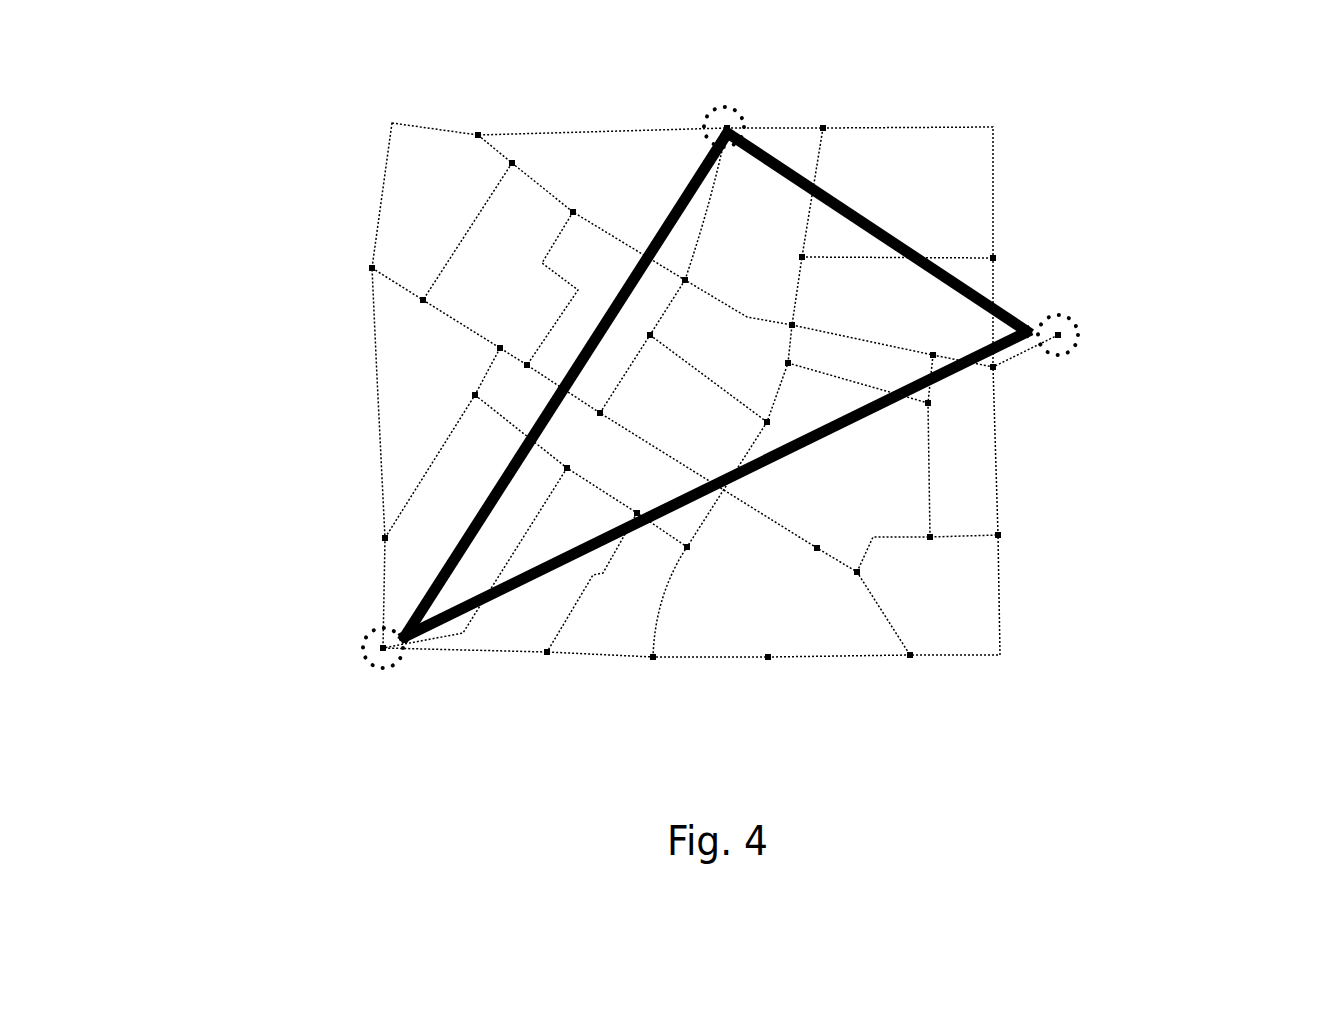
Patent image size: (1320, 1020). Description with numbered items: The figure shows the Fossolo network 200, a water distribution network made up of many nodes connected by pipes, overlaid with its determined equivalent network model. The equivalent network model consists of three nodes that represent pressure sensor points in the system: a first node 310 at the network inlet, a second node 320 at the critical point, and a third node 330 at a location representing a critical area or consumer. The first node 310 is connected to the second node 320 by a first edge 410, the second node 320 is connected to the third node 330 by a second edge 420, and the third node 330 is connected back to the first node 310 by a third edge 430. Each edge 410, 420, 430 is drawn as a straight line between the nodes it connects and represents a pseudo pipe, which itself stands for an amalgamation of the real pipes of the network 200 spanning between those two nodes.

The Fossolo network 200 is at (380, 205).
The first node 310 is at (1074, 317).
The second node 320 is at (365, 653).
The third node 330 is at (745, 113).
The first edge 410 is at (820, 447).
The second edge 420 is at (592, 328).
The third edge 430 is at (870, 215).